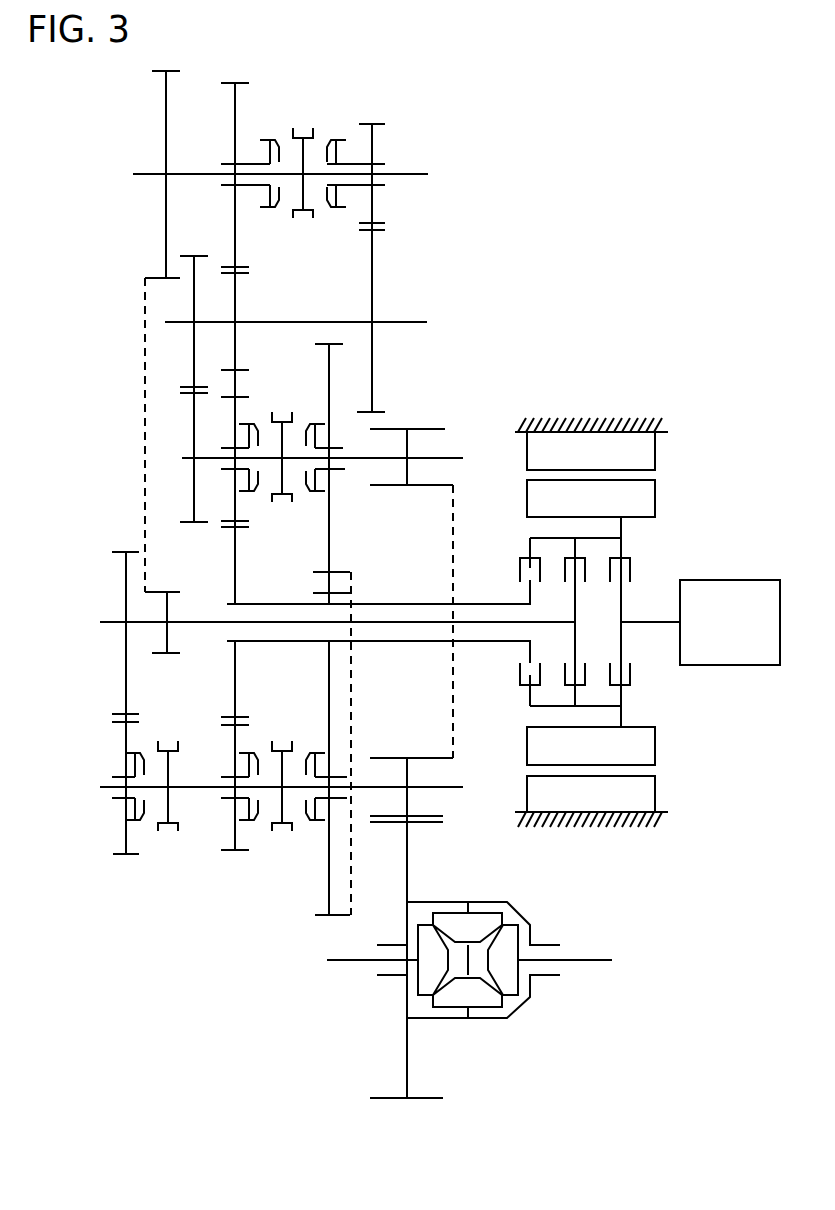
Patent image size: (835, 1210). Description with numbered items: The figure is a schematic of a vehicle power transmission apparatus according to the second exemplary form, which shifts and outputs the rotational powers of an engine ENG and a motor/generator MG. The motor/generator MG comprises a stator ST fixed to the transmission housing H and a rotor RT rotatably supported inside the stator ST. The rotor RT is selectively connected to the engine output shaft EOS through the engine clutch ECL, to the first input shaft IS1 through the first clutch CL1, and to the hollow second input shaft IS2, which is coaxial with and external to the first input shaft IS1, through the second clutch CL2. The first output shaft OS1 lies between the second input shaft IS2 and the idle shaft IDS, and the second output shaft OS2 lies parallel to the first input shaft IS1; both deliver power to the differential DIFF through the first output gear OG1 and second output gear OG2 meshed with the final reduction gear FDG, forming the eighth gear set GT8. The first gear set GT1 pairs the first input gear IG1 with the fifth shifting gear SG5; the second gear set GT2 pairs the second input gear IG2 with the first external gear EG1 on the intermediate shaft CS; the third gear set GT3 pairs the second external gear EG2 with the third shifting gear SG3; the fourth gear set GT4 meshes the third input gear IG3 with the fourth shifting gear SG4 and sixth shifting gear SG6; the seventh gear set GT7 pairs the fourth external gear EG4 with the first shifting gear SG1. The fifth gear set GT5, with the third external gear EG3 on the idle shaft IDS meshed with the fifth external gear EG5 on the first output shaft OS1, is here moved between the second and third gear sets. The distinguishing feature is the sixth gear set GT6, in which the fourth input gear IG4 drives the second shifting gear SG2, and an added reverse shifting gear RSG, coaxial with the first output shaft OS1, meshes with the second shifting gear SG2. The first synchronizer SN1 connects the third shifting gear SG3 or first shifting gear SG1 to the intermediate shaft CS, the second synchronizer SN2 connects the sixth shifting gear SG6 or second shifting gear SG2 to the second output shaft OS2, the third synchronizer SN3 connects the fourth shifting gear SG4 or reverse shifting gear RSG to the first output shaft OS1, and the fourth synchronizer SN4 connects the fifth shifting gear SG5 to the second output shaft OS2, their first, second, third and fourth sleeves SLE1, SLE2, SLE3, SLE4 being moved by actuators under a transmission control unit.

The intermediate shaft CS is at (415, 176).
The idle shaft IDS is at (414, 323).
The first output shaft OS1 is at (460, 456).
The second output shaft OS2 is at (452, 788).
The first input shaft IS1 is at (422, 623).
The second input shaft IS2 is at (378, 642).
The engine output shaft EOS is at (652, 620).
The first external gear EG1 is at (166, 128).
The second external gear EG2 is at (235, 302).
The third external gear EG3 is at (194, 302).
The fourth external gear EG4 is at (372, 277).
The fifth external gear EG5 is at (194, 427).
The first gear set GT1 is at (125, 868).
The second gear set GT2 is at (166, 56).
The third gear set GT3 is at (235, 68).
The fourth gear set GT4 is at (236, 866).
The fifth gear set GT5 is at (194, 240).
The sixth gear set GT6 is at (318, 935).
The seventh gear set GT7 is at (372, 106).
The eighth gear set GT8 is at (406, 1112).
The first shifting gear SG1 is at (374, 146).
The second shifting gear SG2 is at (333, 862).
The third shifting gear SG3 is at (235, 128).
The fourth shifting gear SG4 is at (235, 398).
The fifth shifting gear SG5 is at (126, 827).
The sixth shifting gear SG6 is at (235, 848).
The first sleeve SLE1 is at (303, 130).
The second sleeve SLE2 is at (284, 832).
The third sleeve SLE3 is at (288, 503).
The fourth sleeve SLE4 is at (168, 832).
The first synchronizer SN1 is at (324, 68).
The second synchronizer SN2 is at (286, 894).
The third synchronizer SN3 is at (270, 520).
The fourth synchronizer SN4 is at (169, 894).
The reverse shifting gear RSG is at (329, 358).
The first input gear IG1 is at (126, 669).
The second input gear IG2 is at (168, 640).
The third input gear IG3 is at (235, 568).
The fourth input gear IG4 is at (350, 593).
The first output gear OG1 is at (407, 427).
The second output gear OG2 is at (452, 760).
The final reduction gear FDG is at (410, 862).
The differential DIFF is at (548, 912).
The transmission housing H is at (592, 421).
The stator ST is at (591, 451).
The rotor RT is at (591, 498).
The motor/generator MG is at (663, 452).
The first clutch CL1 is at (556, 556).
The second clutch CL2 is at (508, 686).
The engine clutch ECL is at (657, 660).
The engine ENG is at (730, 622).